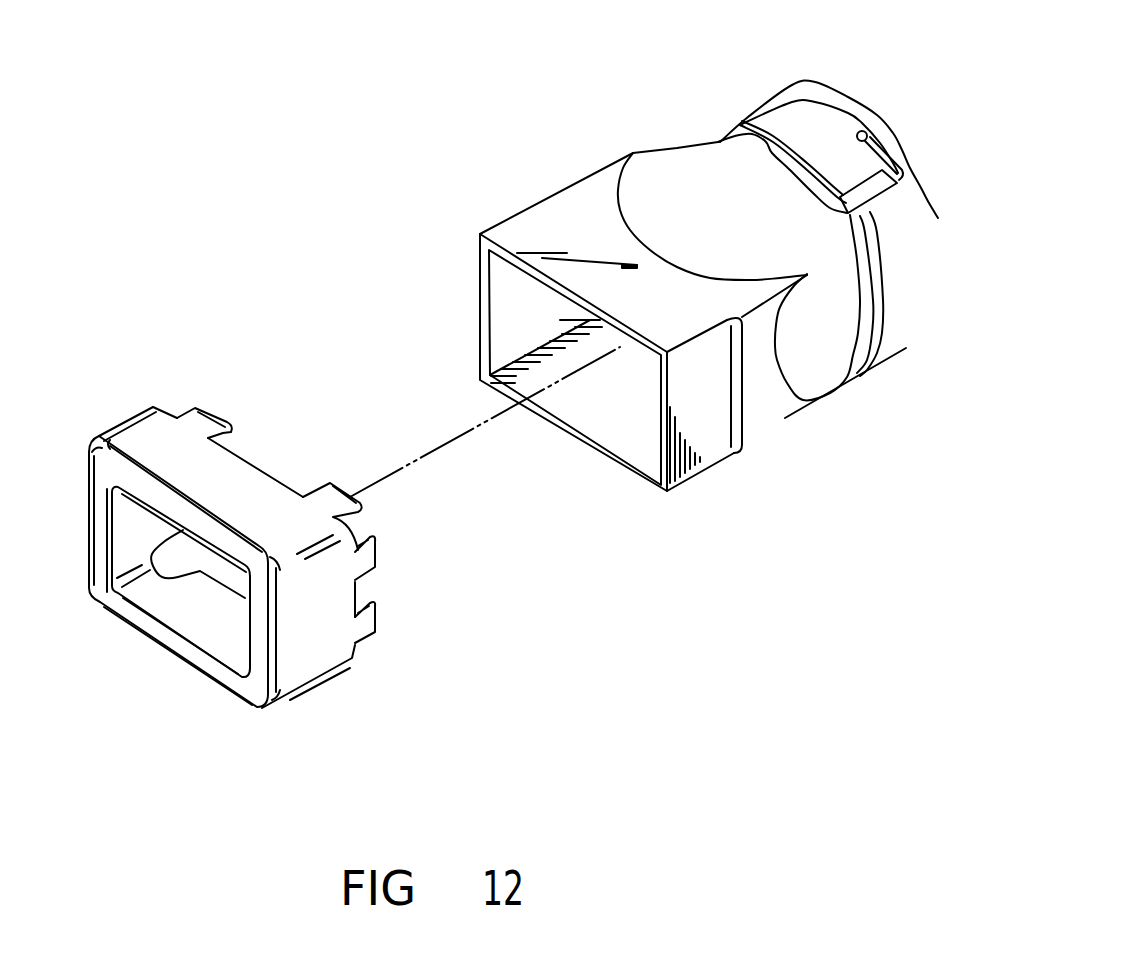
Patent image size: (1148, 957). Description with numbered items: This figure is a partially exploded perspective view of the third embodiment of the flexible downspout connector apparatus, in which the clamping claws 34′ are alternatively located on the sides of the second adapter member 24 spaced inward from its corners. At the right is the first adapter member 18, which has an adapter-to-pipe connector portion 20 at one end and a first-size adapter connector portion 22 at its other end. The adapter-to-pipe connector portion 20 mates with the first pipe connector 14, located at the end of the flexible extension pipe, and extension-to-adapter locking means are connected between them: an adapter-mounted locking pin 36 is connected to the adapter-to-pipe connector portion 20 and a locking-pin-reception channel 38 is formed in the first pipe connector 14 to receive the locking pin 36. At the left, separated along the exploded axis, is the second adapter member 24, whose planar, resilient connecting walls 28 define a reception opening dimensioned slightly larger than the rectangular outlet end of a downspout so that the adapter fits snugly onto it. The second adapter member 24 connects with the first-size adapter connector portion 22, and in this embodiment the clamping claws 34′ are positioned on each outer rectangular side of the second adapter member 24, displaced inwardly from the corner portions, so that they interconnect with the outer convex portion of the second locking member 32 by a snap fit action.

The first pipe connector 14 is at (818, 135).
The first adapter member 18 is at (543, 153).
The adapter-to-pipe connector portion 20 is at (745, 126).
The first-size adapter connector portion 22 is at (702, 432).
The second adapter member 24 is at (107, 411).
The planar, resilient connecting walls 28 is at (190, 605).
The second locking member 32 is at (742, 428).
The clamping claws 34′ is at (207, 400).
The adapter-mounted locking pin 36 is at (858, 128).
The locking-pin-reception channel 38 is at (895, 133).